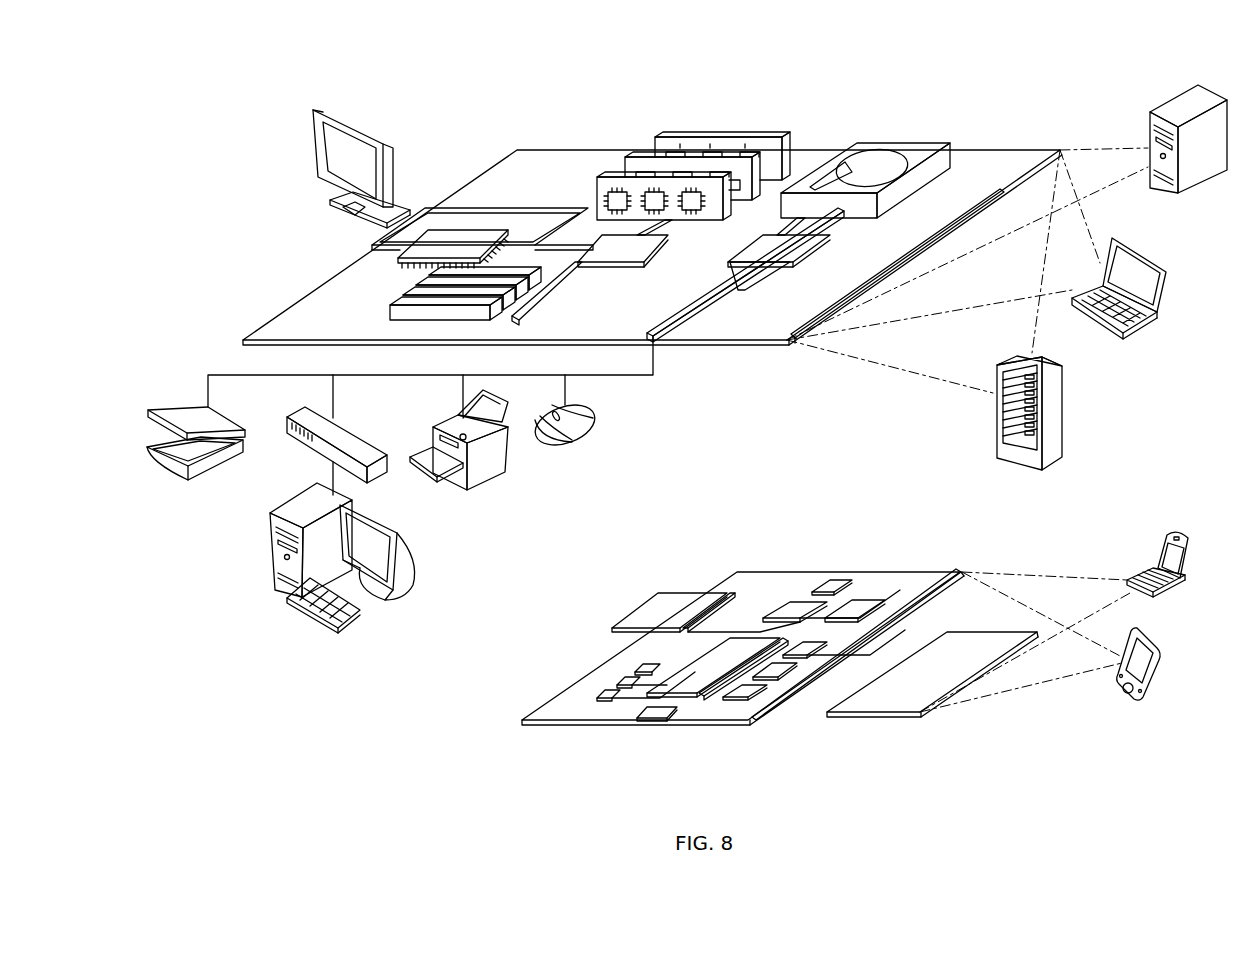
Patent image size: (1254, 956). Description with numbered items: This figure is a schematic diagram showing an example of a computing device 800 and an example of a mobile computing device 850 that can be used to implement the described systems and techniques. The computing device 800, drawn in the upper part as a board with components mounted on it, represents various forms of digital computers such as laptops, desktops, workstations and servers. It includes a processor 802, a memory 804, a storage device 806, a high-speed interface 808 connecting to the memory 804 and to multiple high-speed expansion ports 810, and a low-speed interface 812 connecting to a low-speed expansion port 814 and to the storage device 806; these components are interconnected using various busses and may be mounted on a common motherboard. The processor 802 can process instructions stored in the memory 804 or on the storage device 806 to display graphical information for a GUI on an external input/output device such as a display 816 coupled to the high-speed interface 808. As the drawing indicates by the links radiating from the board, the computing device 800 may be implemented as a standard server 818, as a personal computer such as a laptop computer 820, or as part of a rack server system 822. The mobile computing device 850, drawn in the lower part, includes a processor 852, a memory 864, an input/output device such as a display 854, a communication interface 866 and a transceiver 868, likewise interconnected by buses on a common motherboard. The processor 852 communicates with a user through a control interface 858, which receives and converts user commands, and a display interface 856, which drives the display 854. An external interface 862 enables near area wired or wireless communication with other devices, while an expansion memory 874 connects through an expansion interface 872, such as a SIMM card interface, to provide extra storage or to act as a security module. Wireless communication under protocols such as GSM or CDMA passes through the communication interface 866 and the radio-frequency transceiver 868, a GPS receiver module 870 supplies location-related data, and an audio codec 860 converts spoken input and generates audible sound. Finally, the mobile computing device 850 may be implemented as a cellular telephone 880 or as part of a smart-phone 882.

The computing device 800 is at (496, 116).
The processor 802 is at (398, 250).
The memory 804 is at (716, 137).
The storage device 806 is at (905, 143).
The high-speed interface 808 is at (610, 266).
The high-speed expansion ports 810 is at (282, 313).
The low-speed interface 812 is at (815, 250).
The low-speed expansion port 814 is at (707, 314).
The display 816 is at (313, 110).
The standard server 818 is at (1165, 100).
The laptop computer 820 is at (1160, 262).
The rack server system 822 is at (1065, 420).
The mobile computing device 850 is at (703, 528).
The processor 852 is at (700, 657).
The display 854 is at (873, 717).
The display interface 856 is at (745, 699).
The control interface 858 is at (772, 678).
The audio codec 860 is at (803, 656).
The external interface 862 is at (652, 720).
The memory 864 is at (597, 693).
The communication interface 866 is at (795, 602).
The transceiver 868 is at (860, 600).
The GPS receiver module 870 is at (838, 578).
The expansion interface 872 is at (725, 592).
The expansion memory 874 is at (641, 622).
The cellular telephone 880 is at (1192, 535).
The smart-phone 882 is at (1157, 645).